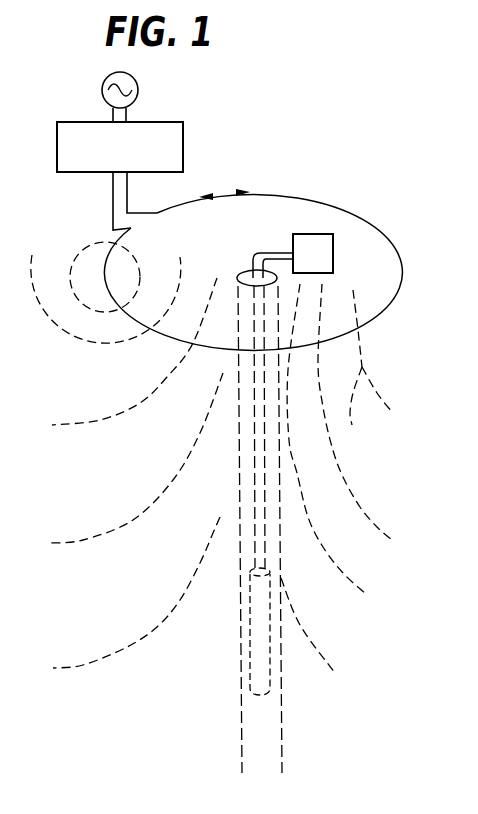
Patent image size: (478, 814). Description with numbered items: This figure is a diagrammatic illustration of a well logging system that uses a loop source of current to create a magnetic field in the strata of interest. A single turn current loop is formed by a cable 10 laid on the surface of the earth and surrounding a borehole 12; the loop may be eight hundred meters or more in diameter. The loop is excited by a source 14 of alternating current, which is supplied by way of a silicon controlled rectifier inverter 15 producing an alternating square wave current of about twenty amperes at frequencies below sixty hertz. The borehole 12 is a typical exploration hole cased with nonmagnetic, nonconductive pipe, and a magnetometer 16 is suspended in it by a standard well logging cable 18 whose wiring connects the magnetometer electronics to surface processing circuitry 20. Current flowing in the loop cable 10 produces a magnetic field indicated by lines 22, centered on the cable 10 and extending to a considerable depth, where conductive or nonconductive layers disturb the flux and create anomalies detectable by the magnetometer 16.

The cable 10 is at (310, 197).
The borehole 12 is at (241, 269).
The source of alternating current 14 is at (103, 92).
The silicon controlled rectifier inverter 15 is at (184, 134).
The magnetometer 16 is at (266, 650).
The well logging cable 18 is at (263, 528).
The surface processing circuitry 20 is at (334, 250).
The lines of magnetic field force 22 is at (333, 450).